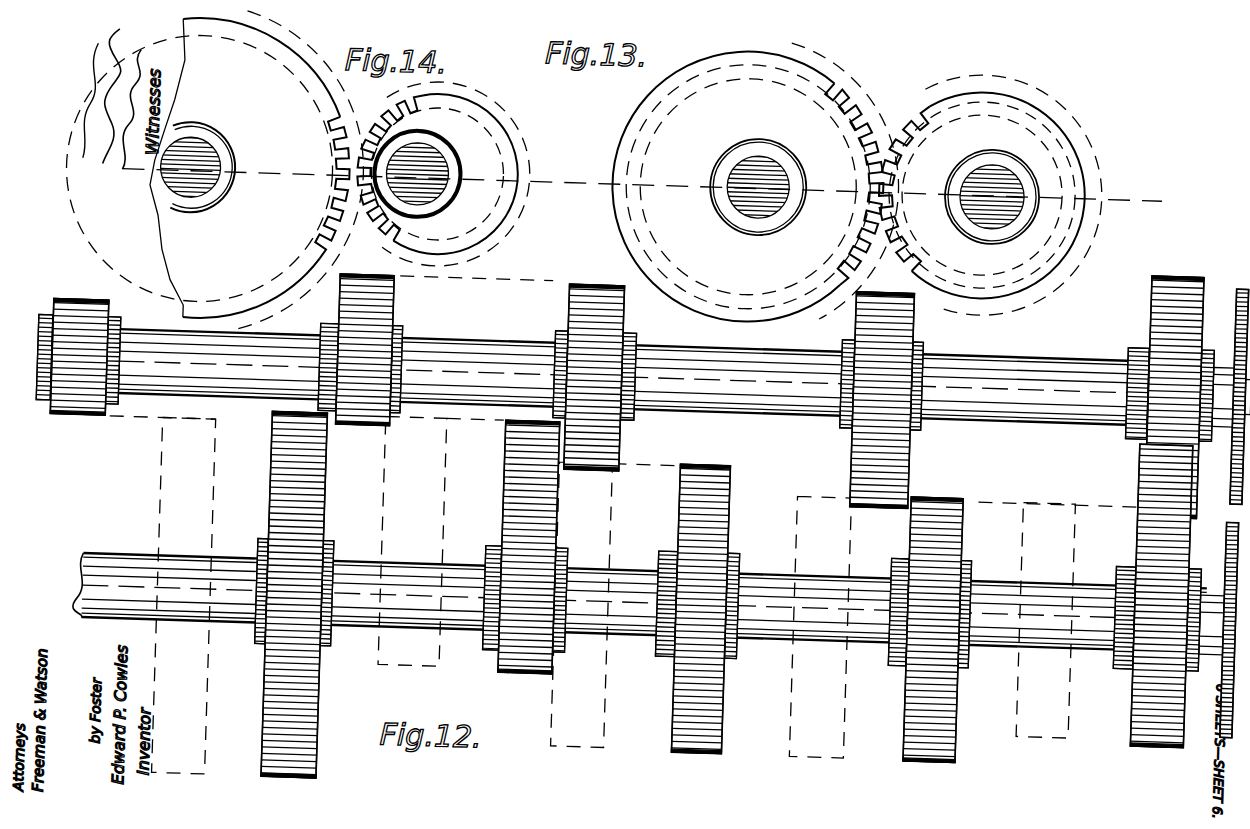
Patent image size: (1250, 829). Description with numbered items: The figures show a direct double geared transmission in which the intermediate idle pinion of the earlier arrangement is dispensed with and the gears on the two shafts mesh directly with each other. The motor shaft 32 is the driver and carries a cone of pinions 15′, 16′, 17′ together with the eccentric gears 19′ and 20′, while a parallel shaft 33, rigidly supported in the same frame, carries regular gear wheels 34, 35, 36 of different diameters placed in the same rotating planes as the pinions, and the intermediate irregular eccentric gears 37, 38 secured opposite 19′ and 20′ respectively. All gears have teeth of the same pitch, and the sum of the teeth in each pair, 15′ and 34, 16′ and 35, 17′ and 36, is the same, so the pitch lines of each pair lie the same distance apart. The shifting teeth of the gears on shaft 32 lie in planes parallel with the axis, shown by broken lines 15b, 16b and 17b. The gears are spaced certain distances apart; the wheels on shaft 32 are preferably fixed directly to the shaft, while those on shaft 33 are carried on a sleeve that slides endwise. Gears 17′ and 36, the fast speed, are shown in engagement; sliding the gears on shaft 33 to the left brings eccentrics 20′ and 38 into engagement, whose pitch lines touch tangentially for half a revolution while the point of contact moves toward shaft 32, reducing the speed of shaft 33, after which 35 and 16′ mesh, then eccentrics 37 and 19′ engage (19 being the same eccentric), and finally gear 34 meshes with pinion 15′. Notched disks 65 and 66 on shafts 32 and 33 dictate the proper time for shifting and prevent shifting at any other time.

In FIG. 14, the motor shaft 32 is at (432, 177).
In FIG. 13, the motor shaft 32 is at (991, 168).
In FIG. 12, the motor shaft 32 is at (461, 358).
In FIG. 14, the shaft 33 is at (207, 174).
In FIG. 13, the shaft 33 is at (753, 161).
In FIG. 12, the shaft 33 is at (455, 588).
In FIG. 12, the gear wheel 34 is at (289, 490).
In FIG. 12, the gear wheel 35 is at (717, 510).
In FIG. 12, the gear wheel 36 is at (1157, 532).
In FIG. 14, the eccentric gear 37 is at (215, 168).
In FIG. 12, the eccentric gear 37 is at (521, 485).
In FIG. 13, the eccentric gear 38 is at (755, 182).
In FIG. 12, the eccentric gear 38 is at (953, 536).
In FIG. 14, the eccentric gear 19 is at (444, 174).
In FIG. 12, the pinion 15′ is at (88, 422).
In FIG. 12, the eccentric gear 19′ is at (365, 412).
In FIG. 12, the pinion 16′ is at (607, 449).
In FIG. 13, the eccentric gear 20′ is at (990, 195).
In FIG. 12, the eccentric gear 20′ is at (896, 461).
In FIG. 12, the pinion 17′ is at (1156, 473).
In FIG. 12, the broken line 15b is at (177, 407).
In FIG. 12, the broken line 16b is at (477, 280).
In FIG. 12, the broken line 17b is at (1061, 504).
In FIG. 12, the disk 65 is at (1237, 312).
In FIG. 12, the disk 66 is at (1235, 562).